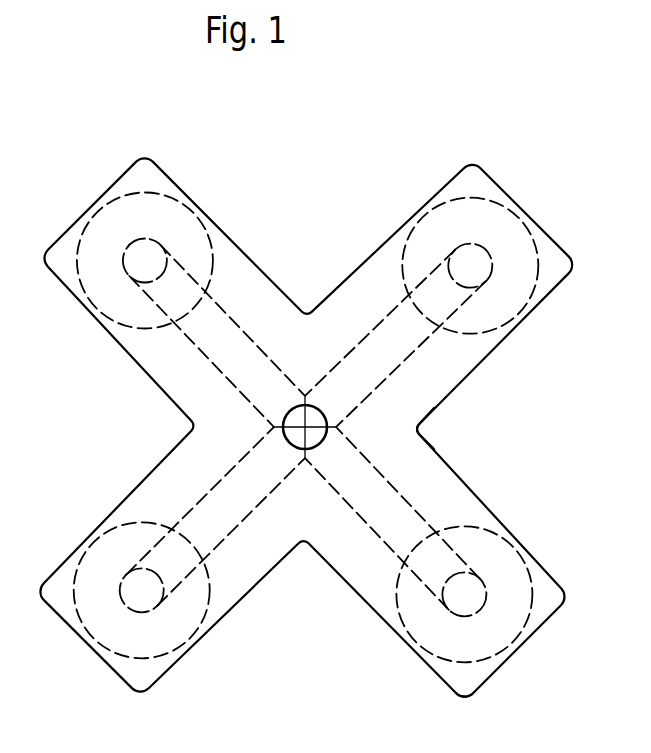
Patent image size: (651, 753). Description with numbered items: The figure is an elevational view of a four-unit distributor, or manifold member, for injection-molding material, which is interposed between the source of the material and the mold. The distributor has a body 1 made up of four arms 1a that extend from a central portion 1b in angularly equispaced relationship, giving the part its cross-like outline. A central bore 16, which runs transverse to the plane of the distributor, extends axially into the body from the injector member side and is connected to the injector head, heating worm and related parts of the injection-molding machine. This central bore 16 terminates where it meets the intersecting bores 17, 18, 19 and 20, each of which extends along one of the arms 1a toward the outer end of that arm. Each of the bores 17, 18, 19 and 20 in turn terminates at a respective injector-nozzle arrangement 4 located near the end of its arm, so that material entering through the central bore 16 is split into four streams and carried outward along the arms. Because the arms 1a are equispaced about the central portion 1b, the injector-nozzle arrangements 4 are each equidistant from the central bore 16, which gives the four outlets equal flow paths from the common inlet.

The body 1 is at (350, 228).
The arms 1a is at (469, 695).
The central portion 1b is at (386, 432).
The injector-nozzle arrangement 4 is at (86, 301).
The central bore 16 is at (317, 437).
The bore 17 is at (203, 356).
The bore 18 is at (418, 508).
The bore 19 is at (187, 507).
The bore 20 is at (410, 358).